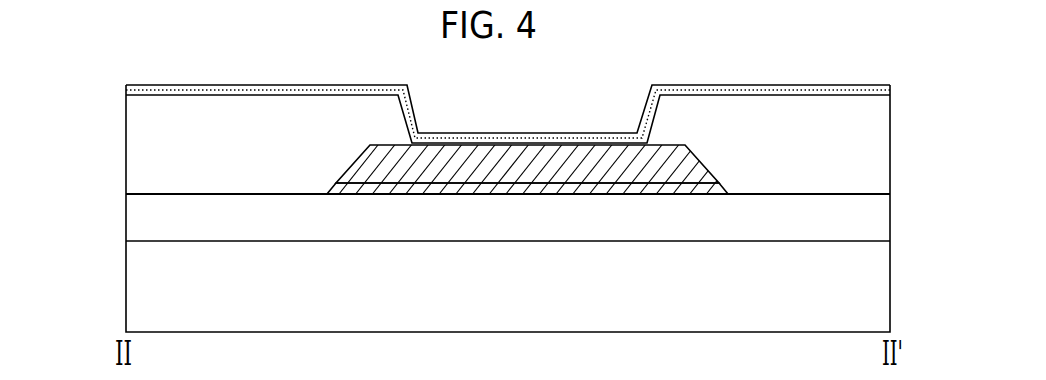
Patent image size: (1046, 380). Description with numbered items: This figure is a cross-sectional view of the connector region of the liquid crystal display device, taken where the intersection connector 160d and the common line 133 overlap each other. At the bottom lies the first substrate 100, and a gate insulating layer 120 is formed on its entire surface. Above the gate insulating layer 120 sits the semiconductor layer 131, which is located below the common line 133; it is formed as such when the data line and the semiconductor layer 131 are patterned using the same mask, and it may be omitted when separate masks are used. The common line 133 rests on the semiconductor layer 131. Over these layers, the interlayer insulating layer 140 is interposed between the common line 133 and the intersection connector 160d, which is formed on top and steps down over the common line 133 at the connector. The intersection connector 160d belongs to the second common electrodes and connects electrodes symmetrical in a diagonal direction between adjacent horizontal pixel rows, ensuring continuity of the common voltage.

The first substrate 100 is at (867, 296).
The gate insulating layer 120 is at (148, 218).
The semiconductor layer 131 is at (675, 188).
The common line 133 is at (675, 161).
The interlayer insulating layer 140 is at (150, 126).
The intersection connector 160d is at (148, 92).